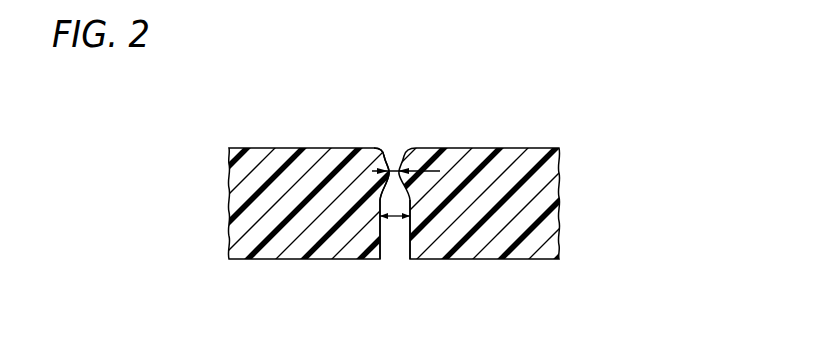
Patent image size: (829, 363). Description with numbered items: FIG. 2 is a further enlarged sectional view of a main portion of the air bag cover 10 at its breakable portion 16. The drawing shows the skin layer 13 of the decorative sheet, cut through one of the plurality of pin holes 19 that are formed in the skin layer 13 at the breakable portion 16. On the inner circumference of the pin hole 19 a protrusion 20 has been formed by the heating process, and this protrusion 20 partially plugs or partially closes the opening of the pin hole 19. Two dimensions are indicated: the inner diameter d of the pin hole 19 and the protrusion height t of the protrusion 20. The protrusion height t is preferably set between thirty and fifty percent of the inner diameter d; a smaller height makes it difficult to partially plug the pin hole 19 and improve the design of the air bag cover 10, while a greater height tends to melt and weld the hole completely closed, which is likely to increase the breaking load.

The air bag cover 10 is at (522, 168).
The skin layer 13 is at (490, 200).
The breakable portion 16 is at (428, 115).
The pin hole 19 is at (382, 227).
The protrusion 20 is at (388, 153).
The inner diameter d is at (395, 222).
The protrusion height t is at (404, 156).